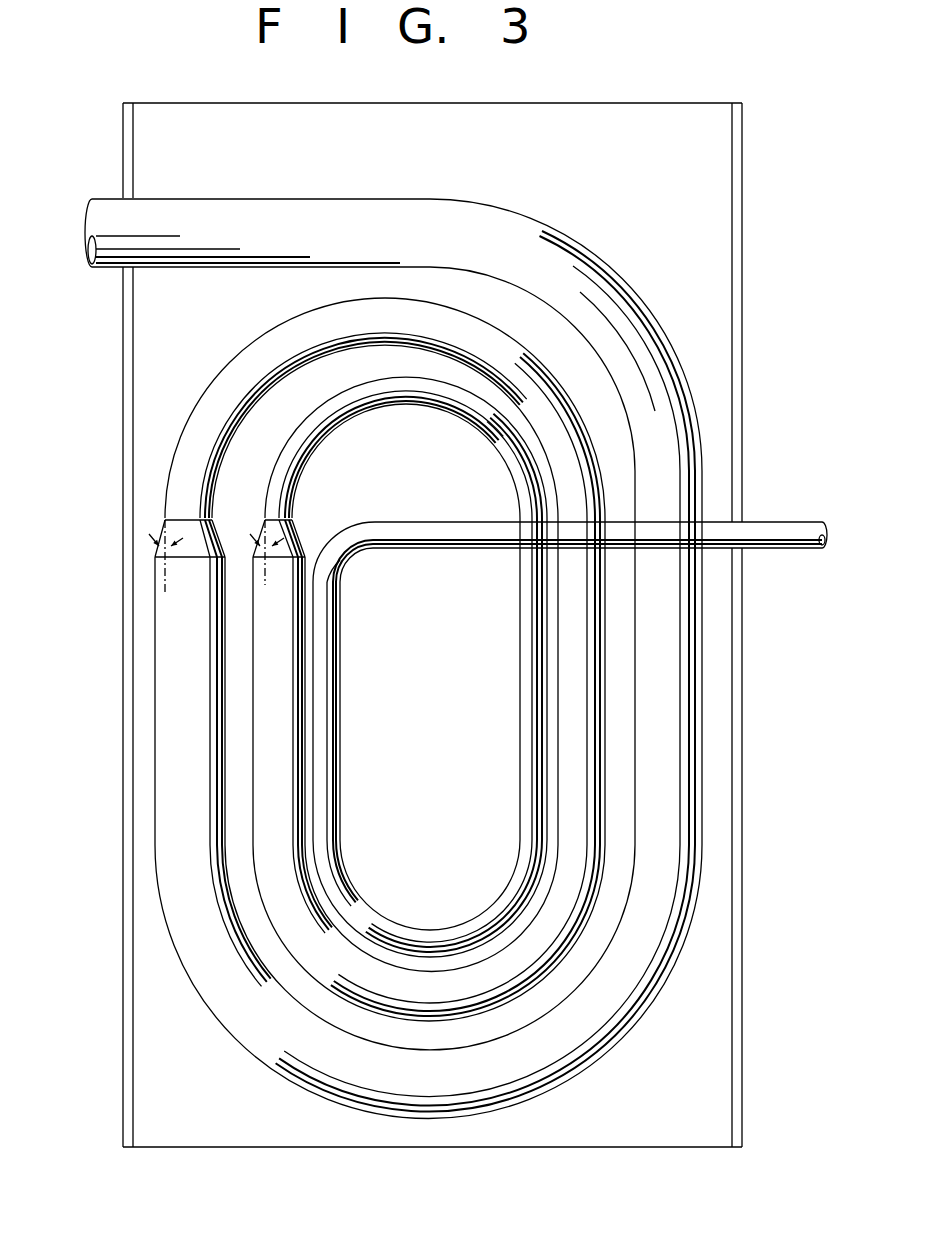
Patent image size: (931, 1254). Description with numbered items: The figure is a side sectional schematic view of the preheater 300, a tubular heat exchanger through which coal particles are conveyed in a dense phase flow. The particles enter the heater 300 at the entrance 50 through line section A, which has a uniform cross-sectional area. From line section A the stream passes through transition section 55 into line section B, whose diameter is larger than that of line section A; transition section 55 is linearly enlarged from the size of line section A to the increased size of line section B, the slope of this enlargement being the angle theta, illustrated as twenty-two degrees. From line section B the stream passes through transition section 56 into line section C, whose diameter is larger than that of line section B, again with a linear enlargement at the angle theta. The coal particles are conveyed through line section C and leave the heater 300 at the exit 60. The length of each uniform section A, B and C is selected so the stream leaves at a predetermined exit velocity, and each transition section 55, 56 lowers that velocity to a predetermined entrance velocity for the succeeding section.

The preheater 300 is at (742, 375).
The exit 60 is at (88, 210).
The entrance 50 is at (828, 541).
The transition section 55 is at (296, 532).
The transition section 56 is at (157, 550).
The line section A is at (391, 530).
The line section B is at (199, 410).
The line section C is at (575, 262).